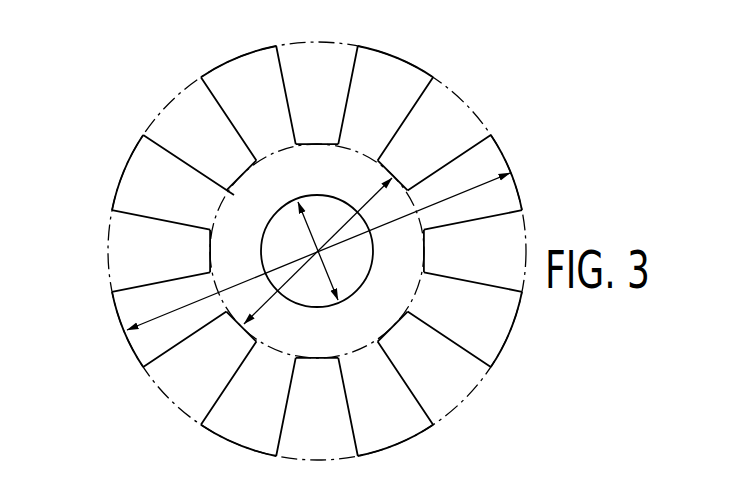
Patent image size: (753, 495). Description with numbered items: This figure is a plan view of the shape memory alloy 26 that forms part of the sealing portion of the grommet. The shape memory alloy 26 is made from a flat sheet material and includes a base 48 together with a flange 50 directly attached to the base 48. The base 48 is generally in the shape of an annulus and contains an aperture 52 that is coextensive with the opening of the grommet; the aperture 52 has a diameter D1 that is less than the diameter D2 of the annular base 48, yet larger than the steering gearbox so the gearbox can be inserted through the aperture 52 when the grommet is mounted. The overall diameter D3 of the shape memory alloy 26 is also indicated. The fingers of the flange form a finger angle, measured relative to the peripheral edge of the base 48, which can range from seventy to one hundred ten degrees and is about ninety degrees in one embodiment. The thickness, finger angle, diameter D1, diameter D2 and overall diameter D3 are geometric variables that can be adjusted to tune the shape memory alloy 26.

The shape memory alloy 26 is at (110, 92).
The base 48 is at (283, 228).
The flange 50 is at (376, 102).
The aperture 52 is at (215, 178).
The diameter of the aperture D1 is at (307, 230).
The diameter of the annular base D2 is at (259, 308).
The overall diameter of the shape memory alloy D3 is at (462, 189).